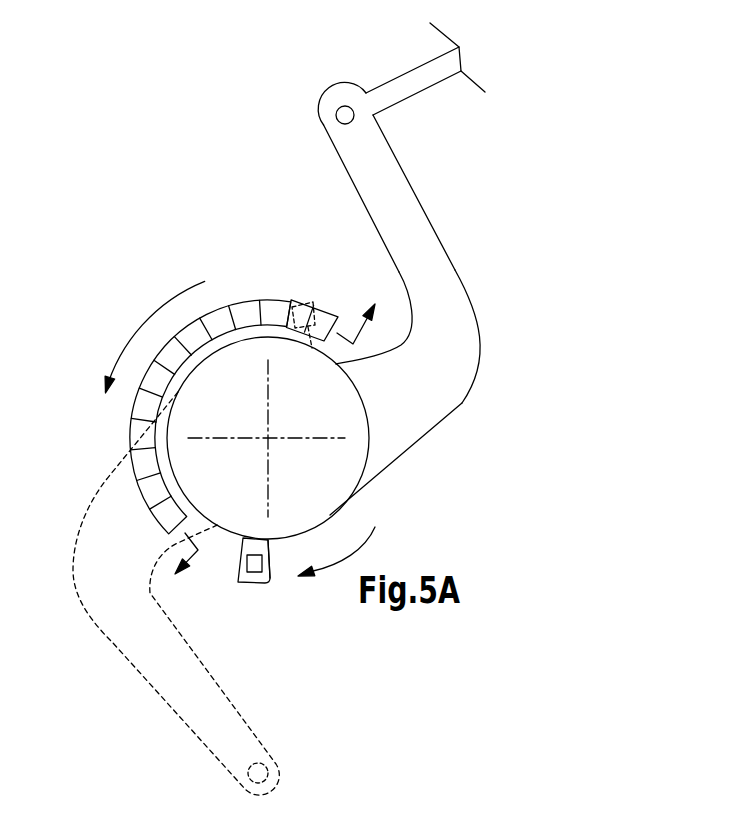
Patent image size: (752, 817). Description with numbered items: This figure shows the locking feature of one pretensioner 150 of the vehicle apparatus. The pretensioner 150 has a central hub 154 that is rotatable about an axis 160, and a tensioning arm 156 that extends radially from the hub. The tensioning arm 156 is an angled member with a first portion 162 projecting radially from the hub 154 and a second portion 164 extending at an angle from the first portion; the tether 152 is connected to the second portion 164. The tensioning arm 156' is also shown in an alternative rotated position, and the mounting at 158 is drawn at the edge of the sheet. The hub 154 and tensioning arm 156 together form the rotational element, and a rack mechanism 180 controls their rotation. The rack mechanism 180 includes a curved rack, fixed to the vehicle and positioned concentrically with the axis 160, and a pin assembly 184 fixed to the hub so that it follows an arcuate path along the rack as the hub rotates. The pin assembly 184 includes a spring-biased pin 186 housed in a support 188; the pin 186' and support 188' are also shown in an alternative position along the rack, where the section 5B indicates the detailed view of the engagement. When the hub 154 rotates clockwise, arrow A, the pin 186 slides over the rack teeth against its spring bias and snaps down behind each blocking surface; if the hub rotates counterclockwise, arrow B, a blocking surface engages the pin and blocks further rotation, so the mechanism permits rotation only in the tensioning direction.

The pretensioner 150 is at (113, 294).
The tether 152 is at (402, 85).
The central hub 154 is at (338, 467).
The tensioning arm 156 is at (455, 433).
The tensioning arm 156' is at (159, 593).
The pivot 158 is at (58, 813).
The axis 160 is at (270, 437).
The first portion 162 is at (408, 404).
The second portion 164 is at (400, 210).
The rack mechanism 180 is at (268, 274).
The pin assembly 184 is at (291, 600).
The pin 186 is at (238, 589).
The pin 186' is at (328, 297).
The support 188 is at (276, 611).
The support 188' is at (306, 282).
The arrow A is at (372, 527).
The arrow B is at (183, 291).
The section 5B is at (276, 443).